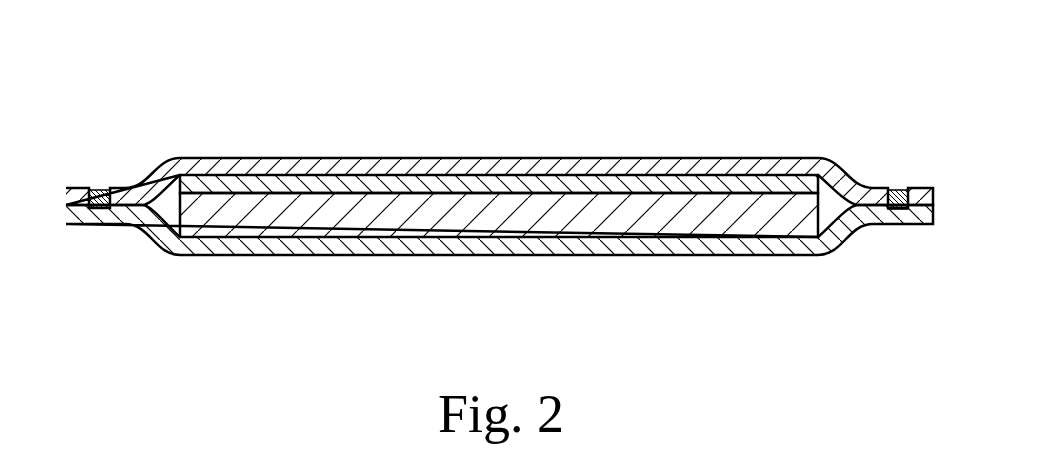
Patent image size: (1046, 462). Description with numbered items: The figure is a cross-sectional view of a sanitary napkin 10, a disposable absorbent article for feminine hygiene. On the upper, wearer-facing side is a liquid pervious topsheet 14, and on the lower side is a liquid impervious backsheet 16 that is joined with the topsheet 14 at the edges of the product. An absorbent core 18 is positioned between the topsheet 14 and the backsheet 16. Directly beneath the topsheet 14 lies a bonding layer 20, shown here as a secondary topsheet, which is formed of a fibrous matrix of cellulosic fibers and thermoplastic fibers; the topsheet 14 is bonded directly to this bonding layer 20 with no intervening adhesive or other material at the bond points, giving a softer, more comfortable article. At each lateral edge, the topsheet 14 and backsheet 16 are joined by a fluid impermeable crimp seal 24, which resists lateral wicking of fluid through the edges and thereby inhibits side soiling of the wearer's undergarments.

The sanitary napkin 10 is at (499, 179).
The liquid pervious topsheet 14 is at (332, 165).
The liquid impervious backsheet 16 is at (458, 243).
The absorbent core 18 is at (582, 210).
The bonding layer 20 is at (653, 182).
The crimp seal 24 is at (100, 190).